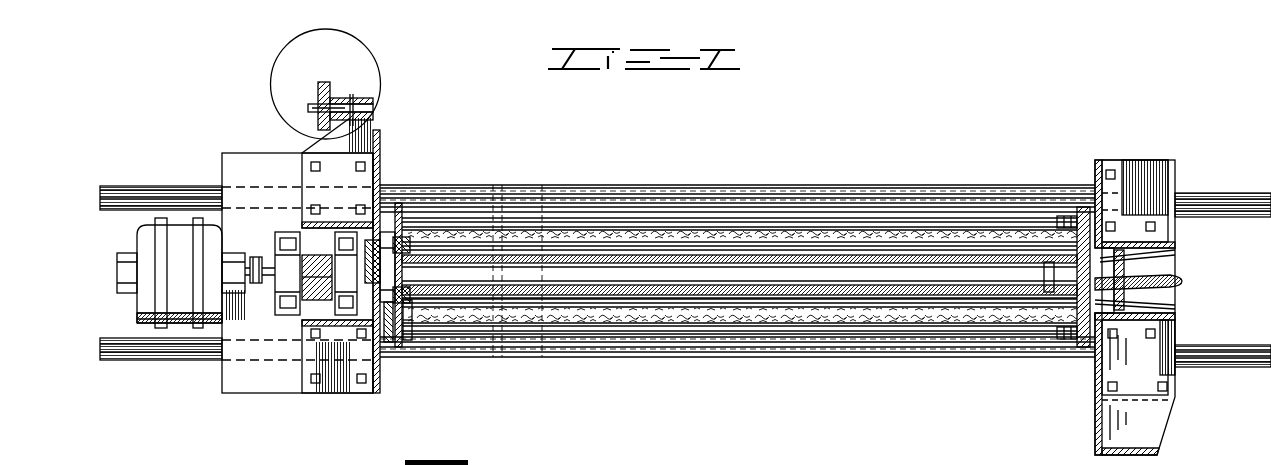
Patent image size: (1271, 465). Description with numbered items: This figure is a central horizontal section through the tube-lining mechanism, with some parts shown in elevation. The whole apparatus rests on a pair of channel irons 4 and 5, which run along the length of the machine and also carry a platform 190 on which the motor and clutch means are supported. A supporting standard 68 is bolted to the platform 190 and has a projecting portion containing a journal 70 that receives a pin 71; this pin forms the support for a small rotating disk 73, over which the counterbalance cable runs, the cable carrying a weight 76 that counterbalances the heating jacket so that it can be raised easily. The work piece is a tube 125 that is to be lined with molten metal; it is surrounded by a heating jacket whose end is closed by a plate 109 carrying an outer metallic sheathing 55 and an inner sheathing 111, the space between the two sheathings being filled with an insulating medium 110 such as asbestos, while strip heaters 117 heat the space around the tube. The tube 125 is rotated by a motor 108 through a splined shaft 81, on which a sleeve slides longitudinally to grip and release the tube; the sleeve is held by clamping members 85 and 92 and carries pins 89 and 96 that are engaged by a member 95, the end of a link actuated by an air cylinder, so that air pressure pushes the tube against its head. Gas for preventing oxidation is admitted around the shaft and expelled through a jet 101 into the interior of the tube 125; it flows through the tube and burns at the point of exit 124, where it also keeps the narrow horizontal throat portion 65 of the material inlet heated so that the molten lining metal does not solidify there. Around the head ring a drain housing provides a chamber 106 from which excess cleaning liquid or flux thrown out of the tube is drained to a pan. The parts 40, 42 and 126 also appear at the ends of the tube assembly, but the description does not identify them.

The channel iron 4 is at (1240, 362).
The channel iron 5 is at (1226, 201).
The lower heating tube 40 is at (640, 323).
The bearing collar 42 is at (412, 342).
The metallic sheathing 55 is at (735, 275).
The horizontal portion 65 is at (1176, 284).
The supporting standard 68 is at (382, 136).
The journal 70 is at (356, 111).
The pin 71 is at (310, 108).
The rotating disk 73 is at (318, 95).
The weight 76 is at (326, 84).
The shaft 81 is at (264, 264).
The clamping member 85 is at (285, 292).
The pin 89 is at (286, 232).
The clamping member 92 is at (350, 328).
The member 95 is at (335, 322).
The pin 96 is at (300, 302).
The jet 101 is at (412, 268).
The chamber 106 is at (386, 238).
The motor 108 is at (190, 318).
The plate 109 is at (704, 324).
The insulating medium 110 is at (672, 228).
The inner sheathing 111 is at (739, 215).
The strip heaters 117 is at (812, 263).
The point of exit 124 is at (1170, 302).
The tube 125 is at (862, 288).
The bearing sleeve 126 is at (394, 345).
The platform 190 is at (238, 392).